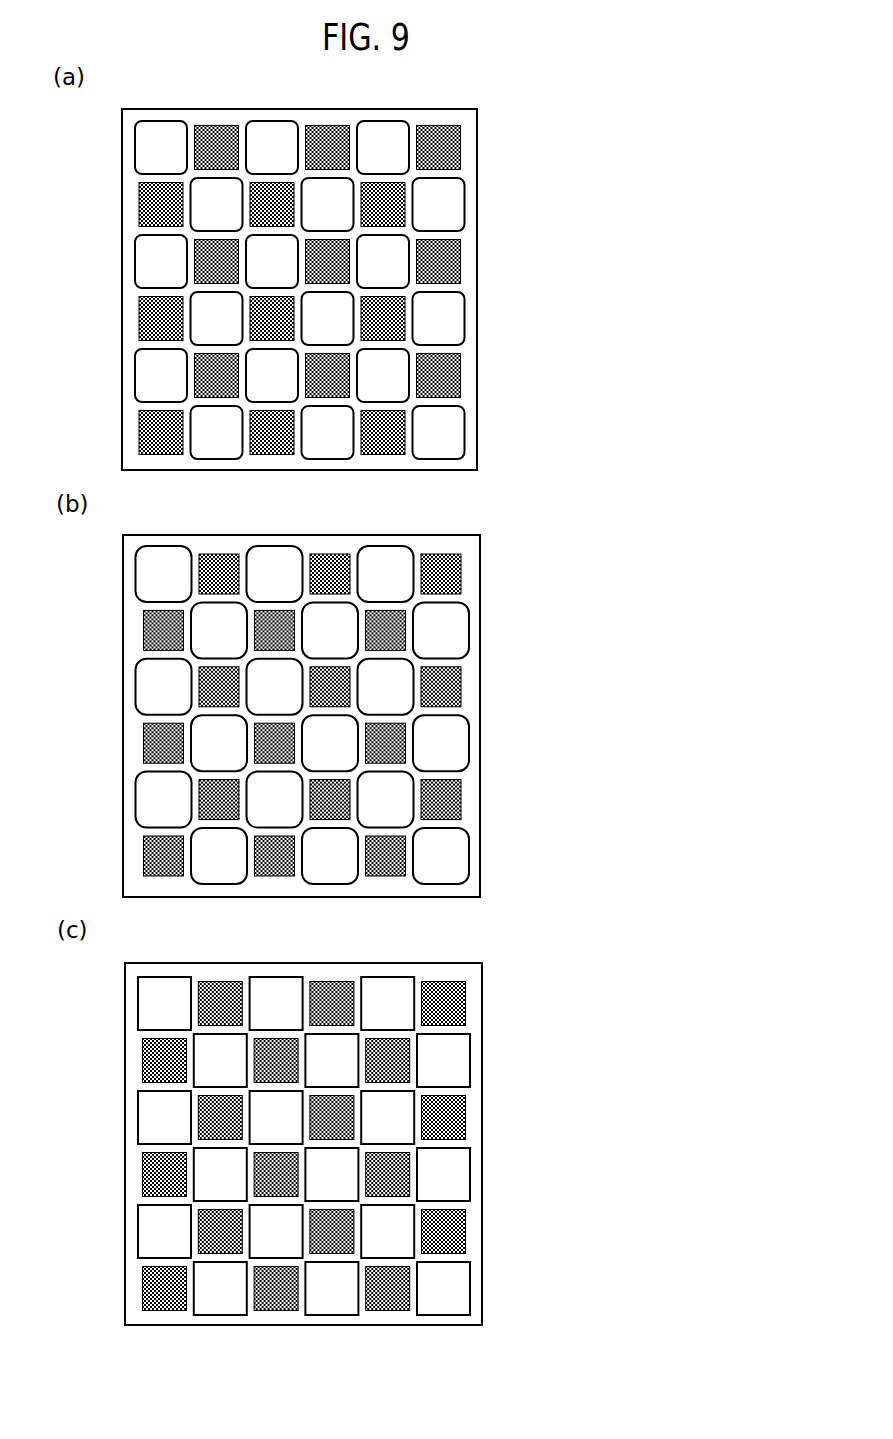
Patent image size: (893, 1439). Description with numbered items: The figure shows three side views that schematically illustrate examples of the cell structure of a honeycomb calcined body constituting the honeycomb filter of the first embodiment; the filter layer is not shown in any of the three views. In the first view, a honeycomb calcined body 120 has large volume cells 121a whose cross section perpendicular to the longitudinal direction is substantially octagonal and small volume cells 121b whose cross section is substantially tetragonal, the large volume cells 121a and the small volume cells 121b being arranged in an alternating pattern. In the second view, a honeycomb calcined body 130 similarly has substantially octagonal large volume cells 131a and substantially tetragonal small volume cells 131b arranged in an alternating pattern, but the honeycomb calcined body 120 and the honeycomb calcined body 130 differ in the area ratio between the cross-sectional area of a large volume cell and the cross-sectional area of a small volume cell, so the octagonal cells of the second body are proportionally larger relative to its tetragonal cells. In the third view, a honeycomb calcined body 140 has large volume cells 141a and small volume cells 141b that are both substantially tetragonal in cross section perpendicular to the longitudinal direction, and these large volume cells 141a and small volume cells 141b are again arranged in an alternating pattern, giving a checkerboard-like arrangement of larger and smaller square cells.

The honeycomb calcined body 120 is at (559, 95).
The large volume cells 121a is at (453, 322).
The small volume cells 121b is at (450, 255).
The honeycomb calcined body 130 is at (560, 517).
The large volume cells 131a is at (455, 748).
The small volume cells 131b is at (455, 683).
The honeycomb calcined body 140 is at (562, 950).
The large volume cells 141a is at (457, 1173).
The small volume cells 141b is at (457, 1112).